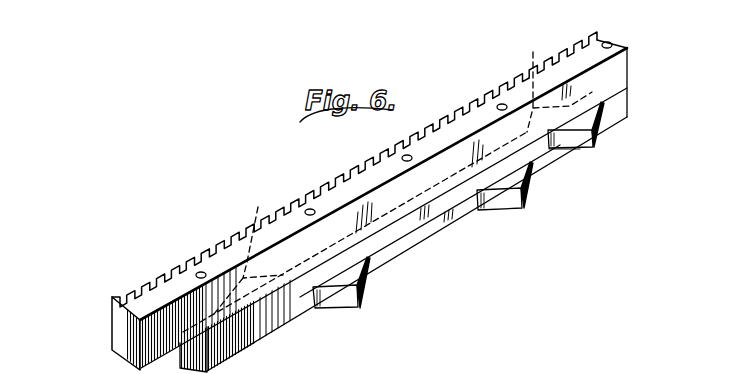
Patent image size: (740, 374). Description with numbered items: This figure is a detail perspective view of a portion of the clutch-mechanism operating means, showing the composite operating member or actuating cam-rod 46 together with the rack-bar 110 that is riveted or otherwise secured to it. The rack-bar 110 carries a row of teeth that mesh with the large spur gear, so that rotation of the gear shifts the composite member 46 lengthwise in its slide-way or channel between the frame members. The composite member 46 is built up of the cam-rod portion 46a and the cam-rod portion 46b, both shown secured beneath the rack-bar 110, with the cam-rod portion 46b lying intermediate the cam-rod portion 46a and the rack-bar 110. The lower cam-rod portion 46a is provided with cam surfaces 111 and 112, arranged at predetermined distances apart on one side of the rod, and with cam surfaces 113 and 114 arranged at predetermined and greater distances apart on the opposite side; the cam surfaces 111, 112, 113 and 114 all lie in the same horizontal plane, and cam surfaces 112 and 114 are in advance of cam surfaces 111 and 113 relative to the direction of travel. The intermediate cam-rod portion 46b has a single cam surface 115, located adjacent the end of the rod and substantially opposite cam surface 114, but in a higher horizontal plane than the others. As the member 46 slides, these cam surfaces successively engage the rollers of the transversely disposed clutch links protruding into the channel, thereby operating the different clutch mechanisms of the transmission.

The composite operating member 46 is at (90, 347).
The cam-rod portion 46a is at (627, 117).
The cam-rod portion 46b is at (603, 92).
The rack-bar 110 is at (512, 87).
The cam surface 111 is at (359, 309).
The cam surface 112 is at (522, 206).
The cam surface 113 is at (355, 232).
The cam surface 114 is at (544, 81).
The cam surface 115 is at (594, 139).